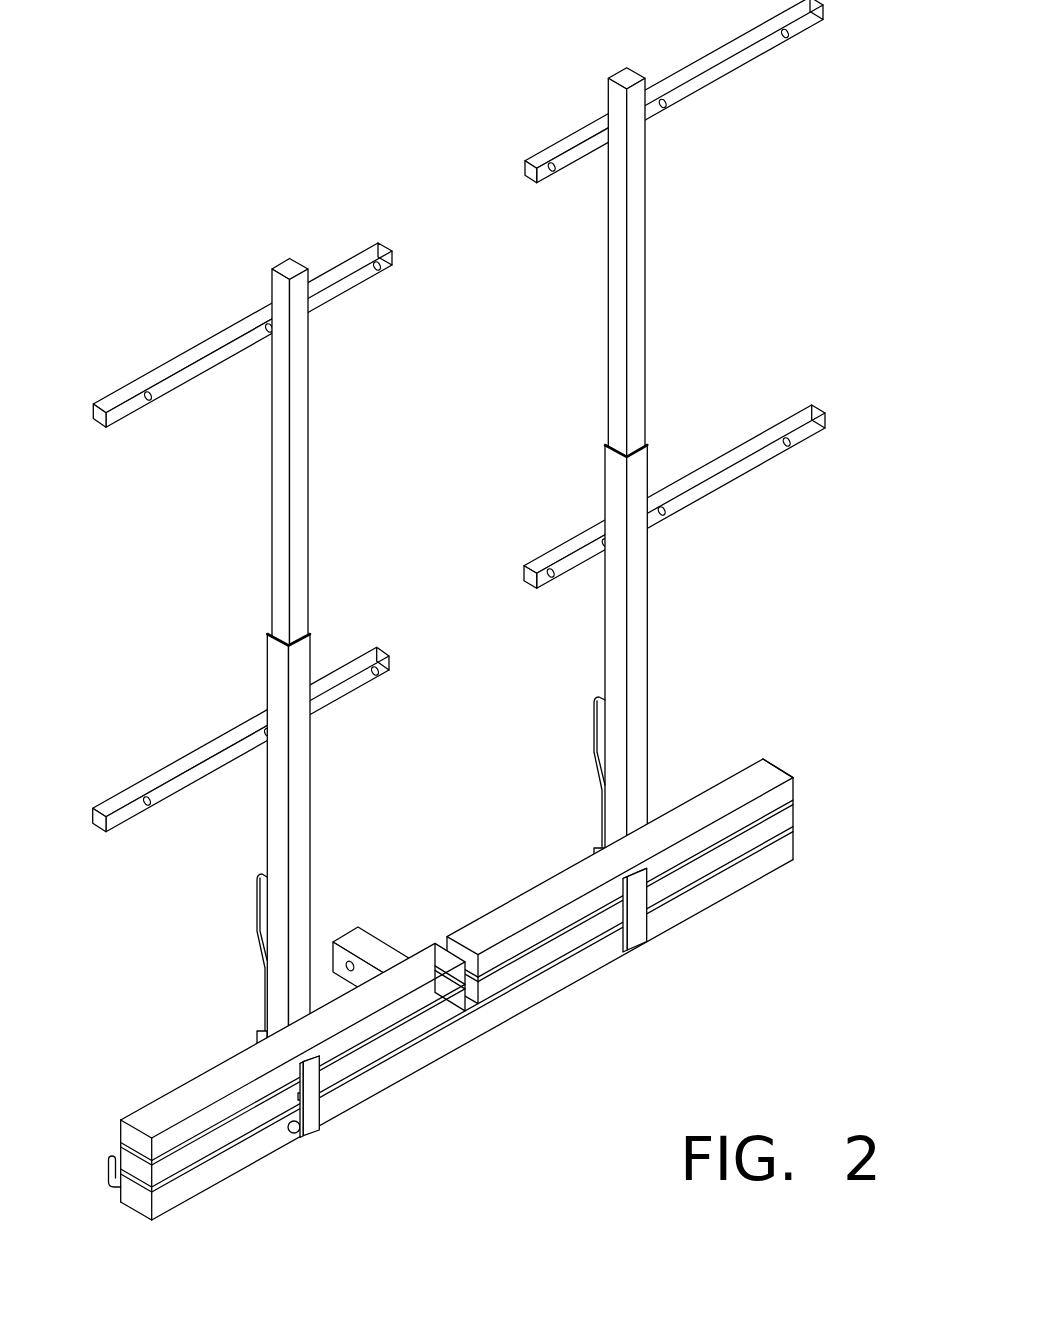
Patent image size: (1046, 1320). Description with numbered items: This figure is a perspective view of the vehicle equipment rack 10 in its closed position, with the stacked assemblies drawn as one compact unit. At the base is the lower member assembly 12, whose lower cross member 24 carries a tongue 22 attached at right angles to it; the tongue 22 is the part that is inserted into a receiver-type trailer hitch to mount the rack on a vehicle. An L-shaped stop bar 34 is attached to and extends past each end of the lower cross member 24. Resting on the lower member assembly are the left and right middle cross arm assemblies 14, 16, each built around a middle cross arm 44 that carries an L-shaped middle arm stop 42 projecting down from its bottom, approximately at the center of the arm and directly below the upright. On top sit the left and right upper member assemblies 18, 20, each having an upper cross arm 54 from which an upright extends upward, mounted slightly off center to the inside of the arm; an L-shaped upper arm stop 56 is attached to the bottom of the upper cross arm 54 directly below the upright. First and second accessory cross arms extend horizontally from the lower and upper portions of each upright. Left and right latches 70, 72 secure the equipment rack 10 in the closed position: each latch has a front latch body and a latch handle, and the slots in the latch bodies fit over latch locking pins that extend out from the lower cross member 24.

The equipment rack 10 is at (256, 143).
The lower member assembly 12 is at (460, 1060).
The left middle cross arm assembly 14 is at (92, 1144).
The right middle cross arm assembly 16 is at (805, 805).
The left upper member assembly 18 is at (164, 951).
The right upper member assembly 20 is at (676, 688).
The tongue 22 is at (360, 940).
The lower cross member 24 is at (568, 974).
The stop bar 34 is at (103, 1168).
The middle arm stop 42 is at (297, 1133).
The middle cross arm 44 is at (190, 1154).
The upper cross arm 54 is at (193, 1092).
The upper arm stop 56 is at (297, 1097).
The left latch 70 is at (334, 1158).
The right latch 72 is at (669, 984).